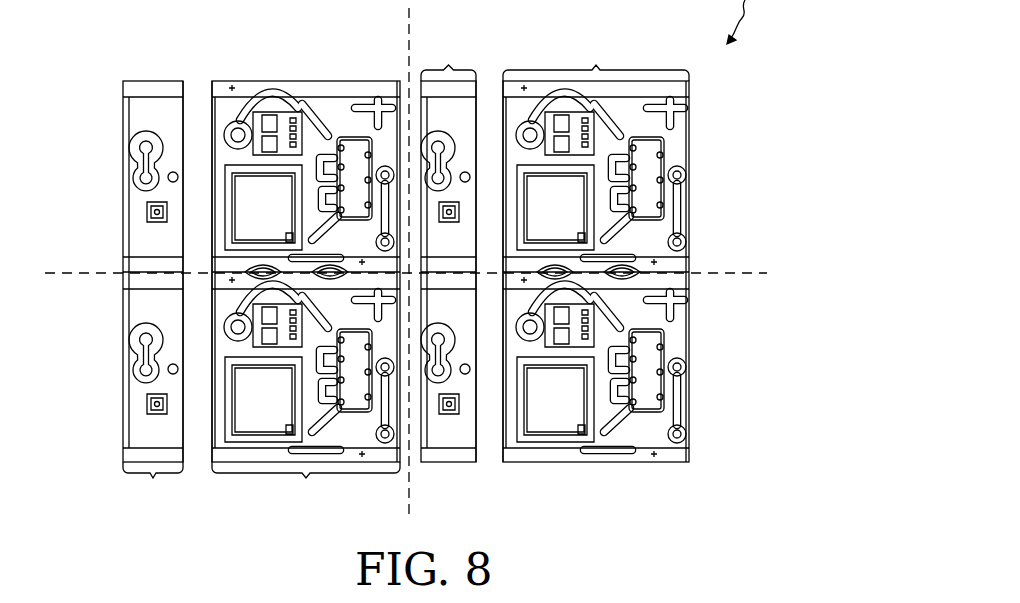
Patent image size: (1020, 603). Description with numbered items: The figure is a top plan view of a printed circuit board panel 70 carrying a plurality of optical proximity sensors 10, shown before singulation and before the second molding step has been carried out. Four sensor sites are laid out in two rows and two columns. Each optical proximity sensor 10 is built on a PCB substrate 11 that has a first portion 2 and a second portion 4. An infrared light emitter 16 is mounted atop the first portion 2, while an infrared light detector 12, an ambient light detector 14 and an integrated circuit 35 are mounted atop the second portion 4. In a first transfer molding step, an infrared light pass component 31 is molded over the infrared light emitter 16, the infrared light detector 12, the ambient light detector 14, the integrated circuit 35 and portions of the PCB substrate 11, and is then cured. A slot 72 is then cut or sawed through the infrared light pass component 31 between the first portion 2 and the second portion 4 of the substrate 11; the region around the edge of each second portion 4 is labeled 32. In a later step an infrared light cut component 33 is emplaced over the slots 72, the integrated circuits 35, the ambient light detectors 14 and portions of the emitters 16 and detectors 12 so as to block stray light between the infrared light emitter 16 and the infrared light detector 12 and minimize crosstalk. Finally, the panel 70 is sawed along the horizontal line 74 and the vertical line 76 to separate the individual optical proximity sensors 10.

The first portion 2 is at (299, 272).
The second portion 4 is at (450, 271).
The optical proximity sensor 10 is at (707, 421).
The PCB substrate 11 is at (673, 460).
The infrared light detector 12 is at (560, 422).
The ambient light detector 14 is at (580, 323).
The infrared light emitter 16 is at (442, 415).
The infrared light pass component 31 is at (460, 430).
The side edge 32 is at (681, 308).
The infrared light cut component 33 is at (222, 110).
The integrated circuit 35 is at (653, 367).
The PCB panel 70 is at (775, 602).
The slot 72 is at (497, 452).
The line 74 is at (767, 273).
The line 76 is at (412, 505).